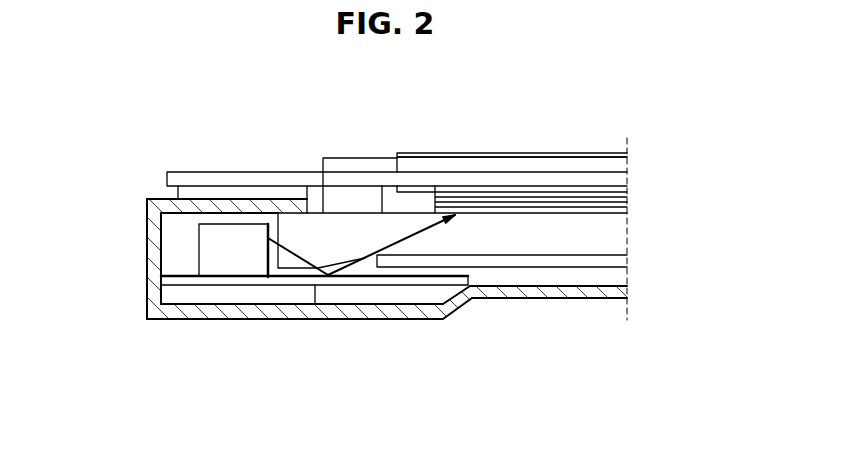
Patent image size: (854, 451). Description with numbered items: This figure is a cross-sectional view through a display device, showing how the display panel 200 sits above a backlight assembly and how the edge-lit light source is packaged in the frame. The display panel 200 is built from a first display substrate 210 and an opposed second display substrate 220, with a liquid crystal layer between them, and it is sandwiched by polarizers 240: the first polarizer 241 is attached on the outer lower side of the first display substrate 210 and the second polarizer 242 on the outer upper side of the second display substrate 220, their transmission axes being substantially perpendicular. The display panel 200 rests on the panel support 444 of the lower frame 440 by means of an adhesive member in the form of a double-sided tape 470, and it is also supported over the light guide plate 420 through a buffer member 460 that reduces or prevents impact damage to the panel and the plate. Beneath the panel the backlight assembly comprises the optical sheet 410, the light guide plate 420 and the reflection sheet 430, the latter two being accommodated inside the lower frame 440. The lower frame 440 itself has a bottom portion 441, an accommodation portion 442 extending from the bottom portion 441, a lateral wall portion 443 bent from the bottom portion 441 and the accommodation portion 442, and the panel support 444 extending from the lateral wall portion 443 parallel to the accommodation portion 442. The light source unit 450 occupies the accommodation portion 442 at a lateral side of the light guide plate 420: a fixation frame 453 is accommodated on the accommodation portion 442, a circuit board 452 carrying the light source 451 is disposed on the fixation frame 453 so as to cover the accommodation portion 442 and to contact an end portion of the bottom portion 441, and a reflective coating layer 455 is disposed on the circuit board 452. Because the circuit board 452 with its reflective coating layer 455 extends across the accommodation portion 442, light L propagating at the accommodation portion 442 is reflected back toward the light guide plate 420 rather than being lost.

The display panel 200 is at (512, 126).
The first display substrate 210 is at (540, 105).
The second display substrate 220 is at (540, 165).
The polarizers 240 is at (570, 166).
The first polarizer 241 is at (543, 184).
The second polarizer 242 is at (627, 155).
The optical sheet 410 is at (633, 192).
The light guide plate 420 is at (627, 233).
The reflection sheet 430 is at (627, 258).
The lower frame 440 is at (380, 302).
The bottom portion 441 is at (548, 329).
The accommodation portion 442 is at (372, 310).
The lateral wall portion 443 is at (158, 247).
The panel support 444 is at (238, 207).
The light source unit 450 is at (249, 273).
The light source 451 is at (212, 238).
The circuit board 452 is at (173, 280).
The fixation frame 453 is at (200, 304).
The reflective coating layer 455 is at (176, 276).
The buffer member 460 is at (352, 198).
The double-sided tape 470 is at (240, 192).
The light L is at (418, 230).